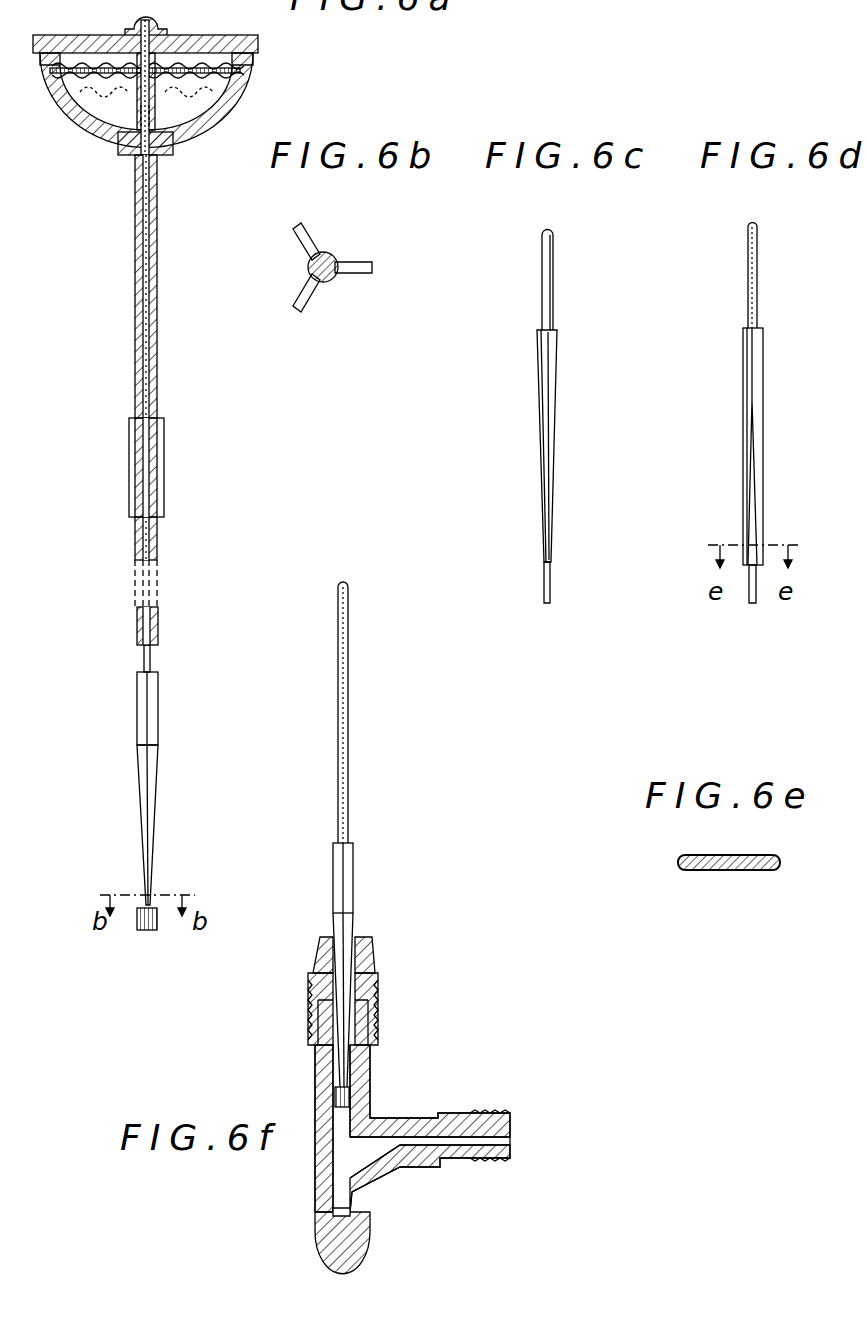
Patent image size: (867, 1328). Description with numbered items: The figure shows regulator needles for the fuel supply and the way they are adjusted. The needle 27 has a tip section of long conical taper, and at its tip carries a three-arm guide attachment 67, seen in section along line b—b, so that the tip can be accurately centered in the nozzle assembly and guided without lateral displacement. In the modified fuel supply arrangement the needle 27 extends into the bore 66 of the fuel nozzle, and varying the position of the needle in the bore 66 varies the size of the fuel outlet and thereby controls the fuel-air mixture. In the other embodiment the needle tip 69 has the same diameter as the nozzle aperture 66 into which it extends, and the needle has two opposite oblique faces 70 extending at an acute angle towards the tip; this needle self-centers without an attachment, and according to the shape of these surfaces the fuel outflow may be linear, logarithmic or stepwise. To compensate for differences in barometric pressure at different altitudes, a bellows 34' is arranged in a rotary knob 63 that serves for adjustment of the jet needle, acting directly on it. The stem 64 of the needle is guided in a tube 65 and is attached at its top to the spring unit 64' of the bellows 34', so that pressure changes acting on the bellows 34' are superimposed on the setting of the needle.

In FIG. 6a, the needle 27 is at (152, 722).
In FIG. 6c, the needle 27 is at (553, 282).
In FIG. 6d, the needle 27 is at (758, 297).
In FIG. 6f, the needle 27 is at (349, 806).
In FIG. 6a, the bellows 34' is at (131, 99).
In FIG. 6a, the rotary knob 63 is at (250, 55).
In FIG. 6a, the stem 64 is at (174, 660).
In FIG. 6a, the spring unit 64' is at (201, 89).
In FIG. 6a, the tube 65 is at (142, 312).
In FIG. 6f, the bore 66 is at (352, 1015).
In FIG. 6a, the three-arm guide attachment 67 is at (152, 930).
In FIG. 6b, the three-arm guide attachment 67 is at (333, 278).
In FIG. 6c, the needle tip 69 is at (552, 360).
In FIG. 6d, the needle tip 69 is at (764, 375).
In FIG. 6c, the oblique faces 70 is at (553, 465).
In FIG. 6d, the oblique faces 70 is at (762, 487).